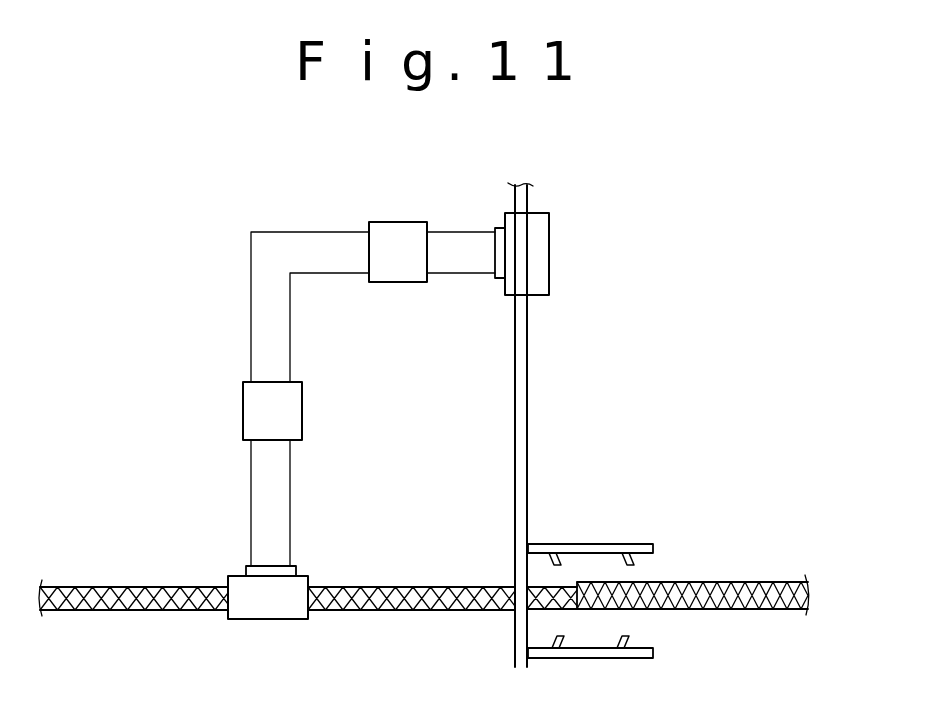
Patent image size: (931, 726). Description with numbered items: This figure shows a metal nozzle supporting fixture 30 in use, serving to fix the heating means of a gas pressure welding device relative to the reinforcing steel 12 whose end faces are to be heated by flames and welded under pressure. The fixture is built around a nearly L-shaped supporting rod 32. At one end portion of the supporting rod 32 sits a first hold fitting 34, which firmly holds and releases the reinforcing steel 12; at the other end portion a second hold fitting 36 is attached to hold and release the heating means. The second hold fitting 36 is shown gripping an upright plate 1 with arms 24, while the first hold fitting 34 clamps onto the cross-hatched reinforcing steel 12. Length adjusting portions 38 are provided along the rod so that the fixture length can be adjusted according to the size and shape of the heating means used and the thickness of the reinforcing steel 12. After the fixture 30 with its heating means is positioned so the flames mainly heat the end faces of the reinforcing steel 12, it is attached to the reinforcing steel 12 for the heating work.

The plate 1 is at (528, 338).
The reinforcing steel 12 is at (138, 610).
The arm / clip 24 is at (562, 553).
The nozzle supporting fixture 30 is at (205, 238).
The supporting rod 32 is at (260, 323).
The first hold fitting 34 is at (297, 612).
The second hold fitting 36 is at (540, 232).
The length adjusting portion 38 is at (405, 231).